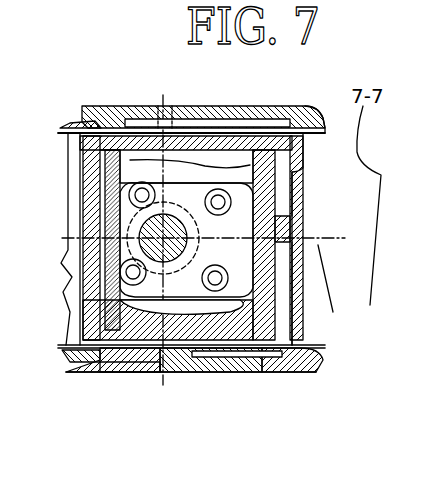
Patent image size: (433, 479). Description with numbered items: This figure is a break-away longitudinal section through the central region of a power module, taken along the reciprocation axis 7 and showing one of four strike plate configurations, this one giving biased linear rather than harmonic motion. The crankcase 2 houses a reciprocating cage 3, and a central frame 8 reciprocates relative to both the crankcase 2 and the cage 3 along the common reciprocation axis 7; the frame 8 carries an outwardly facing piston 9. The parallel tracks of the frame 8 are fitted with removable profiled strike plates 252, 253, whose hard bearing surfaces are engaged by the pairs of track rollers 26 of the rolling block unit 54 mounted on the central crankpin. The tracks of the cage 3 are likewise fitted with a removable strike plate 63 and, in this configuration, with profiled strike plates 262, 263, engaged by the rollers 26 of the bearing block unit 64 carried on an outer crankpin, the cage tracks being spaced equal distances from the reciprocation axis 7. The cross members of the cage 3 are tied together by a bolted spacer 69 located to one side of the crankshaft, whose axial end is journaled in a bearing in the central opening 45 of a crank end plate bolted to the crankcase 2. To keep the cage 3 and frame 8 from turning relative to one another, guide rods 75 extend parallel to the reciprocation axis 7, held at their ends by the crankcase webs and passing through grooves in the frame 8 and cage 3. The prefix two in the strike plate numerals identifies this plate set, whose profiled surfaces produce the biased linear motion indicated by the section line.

The crankcase 2 is at (247, 376).
The reciprocating cage 3 is at (246, 106).
The reciprocation axis 7 is at (330, 289).
The central frame 8 is at (266, 108).
The outwardly facing piston 9 is at (100, 376).
The track rollers 26 is at (202, 376).
The central opening 45 is at (112, 226).
The rolling block unit 54 is at (158, 376).
The strike plate 63 is at (182, 376).
The bearing block unit 64 is at (66, 364).
The bolted spacer 69 is at (118, 148).
The guide rods 75 is at (86, 104).
The profiled strike plate 252 is at (66, 186).
The profiled strike plate 253 is at (236, 376).
The profiled strike plate 262 is at (88, 182).
The profiled strike plate 263 is at (172, 102).